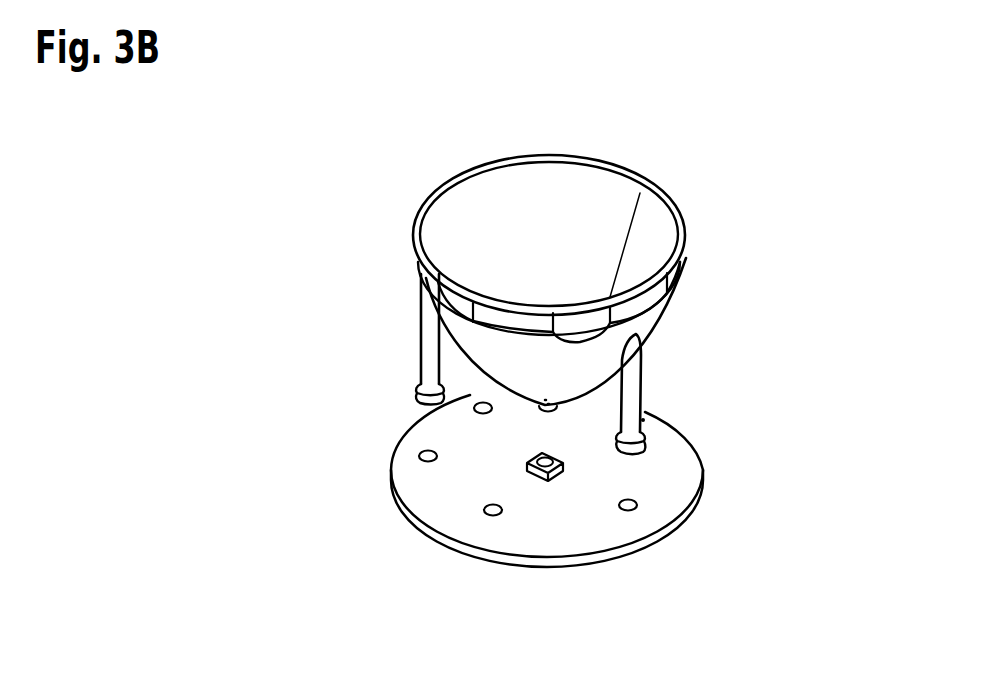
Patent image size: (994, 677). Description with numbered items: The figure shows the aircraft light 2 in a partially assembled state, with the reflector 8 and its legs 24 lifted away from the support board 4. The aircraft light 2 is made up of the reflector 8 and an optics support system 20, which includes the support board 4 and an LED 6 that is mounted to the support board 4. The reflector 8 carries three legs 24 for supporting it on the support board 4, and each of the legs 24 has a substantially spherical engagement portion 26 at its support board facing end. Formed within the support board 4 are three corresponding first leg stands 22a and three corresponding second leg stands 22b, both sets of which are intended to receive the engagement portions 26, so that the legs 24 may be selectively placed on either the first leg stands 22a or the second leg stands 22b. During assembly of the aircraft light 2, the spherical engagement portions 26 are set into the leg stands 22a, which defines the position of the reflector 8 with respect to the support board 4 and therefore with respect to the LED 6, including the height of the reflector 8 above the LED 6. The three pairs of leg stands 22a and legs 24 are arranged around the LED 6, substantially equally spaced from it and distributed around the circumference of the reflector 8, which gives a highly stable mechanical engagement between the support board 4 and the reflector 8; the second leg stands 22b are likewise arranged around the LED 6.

The aircraft light 2 is at (305, 536).
The support board 4 is at (558, 535).
The LED 6 is at (533, 480).
The reflector 8 is at (628, 172).
The optics support system 20 is at (368, 395).
The first leg stands 22a is at (427, 462).
The second leg stands 22b is at (476, 411).
The legs 24 is at (428, 330).
The engagement portion 26 is at (427, 380).